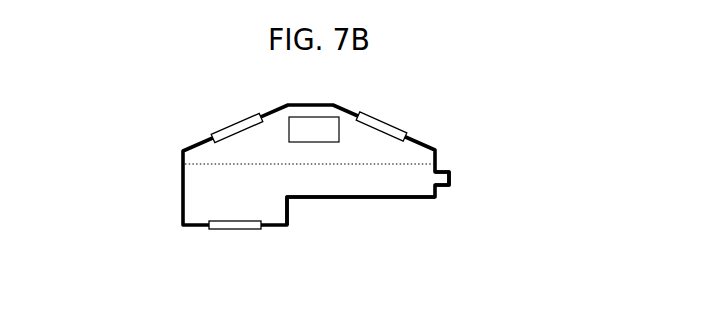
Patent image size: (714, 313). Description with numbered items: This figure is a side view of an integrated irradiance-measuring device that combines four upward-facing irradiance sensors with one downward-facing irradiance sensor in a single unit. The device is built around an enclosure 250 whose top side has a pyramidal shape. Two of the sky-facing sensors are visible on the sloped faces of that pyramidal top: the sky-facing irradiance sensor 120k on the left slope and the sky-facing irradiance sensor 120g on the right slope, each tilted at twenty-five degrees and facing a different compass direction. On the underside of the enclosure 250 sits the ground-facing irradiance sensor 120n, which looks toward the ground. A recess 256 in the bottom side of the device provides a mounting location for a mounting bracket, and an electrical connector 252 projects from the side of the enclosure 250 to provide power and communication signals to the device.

The sky-facing irradiance sensor 120k is at (222, 118).
The sky-facing irradiance sensor 120g is at (401, 115).
The ground-facing irradiance sensor 120n is at (225, 239).
The enclosure 250 is at (438, 140).
The electrical connector 252 is at (463, 173).
The recess 256 is at (387, 214).